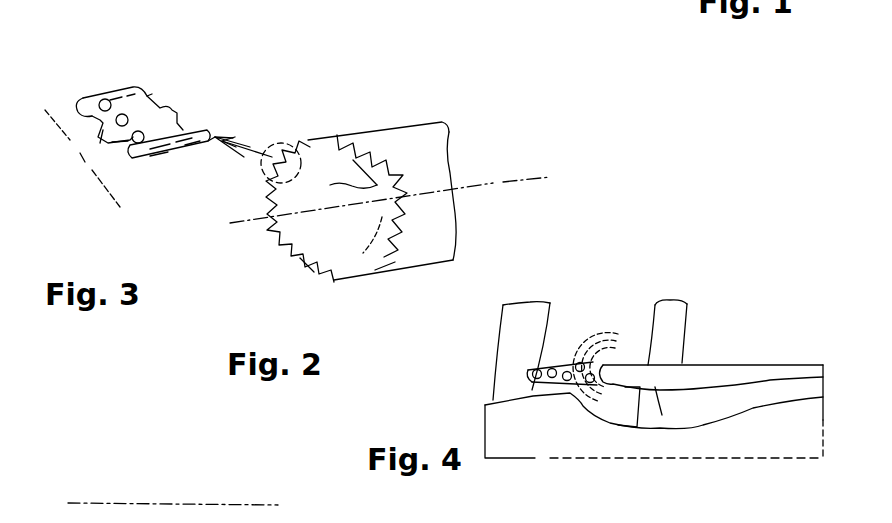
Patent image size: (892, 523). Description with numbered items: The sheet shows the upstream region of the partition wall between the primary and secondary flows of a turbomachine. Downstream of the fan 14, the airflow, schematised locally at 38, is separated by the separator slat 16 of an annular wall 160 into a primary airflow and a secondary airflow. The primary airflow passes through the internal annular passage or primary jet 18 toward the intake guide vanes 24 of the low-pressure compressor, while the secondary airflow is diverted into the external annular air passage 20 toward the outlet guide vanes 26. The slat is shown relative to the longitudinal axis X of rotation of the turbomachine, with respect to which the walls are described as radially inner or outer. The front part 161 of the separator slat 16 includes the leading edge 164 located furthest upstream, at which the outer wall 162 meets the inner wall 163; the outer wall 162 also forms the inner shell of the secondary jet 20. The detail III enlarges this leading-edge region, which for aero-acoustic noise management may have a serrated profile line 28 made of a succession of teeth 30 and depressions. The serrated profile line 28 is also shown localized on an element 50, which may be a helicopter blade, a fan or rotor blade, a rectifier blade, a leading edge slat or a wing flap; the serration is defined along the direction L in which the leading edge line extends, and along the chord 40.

In FIG. 4, the fan 14 is at (500, 333).
In FIG. 3, the separator slat 16 is at (95, 93).
In FIG. 2, the separator slat 16 is at (387, 260).
In FIG. 4, the primary jet 18 is at (654, 411).
In FIG. 4, the external annular air passage 20 is at (713, 351).
In FIG. 4, the intake guide vanes 24 is at (660, 400).
In FIG. 4, the outlet guide vanes 26 is at (668, 323).
In FIG. 3, the serrated profile line 28 is at (100, 143).
In FIG. 2, the serrated profile line 28 is at (263, 227).
In FIG. 3, the teeth 30 is at (87, 100).
In FIG. 4, the airflow 38 is at (568, 363).
In FIG. 3, the chord 40 is at (195, 145).
In FIG. 3, the blade or aerodynamic element 50 is at (160, 110).
In FIG. 2, the annular wall 160 is at (368, 128).
In FIG. 4, the annular wall 160 is at (717, 380).
In FIG. 2, the front part 161 is at (398, 187).
In FIG. 3, the outer wall 162 is at (177, 123).
In FIG. 3, the inner wall 163 is at (163, 153).
In FIG. 3, the leading edge 164 is at (120, 145).
In FIG. 2, the leading edge 164 is at (307, 263).
In FIG. 4, the leading edge 164 is at (612, 367).
In FIG. 2, the direction L is at (100, 500).
In FIG. 2, the longitudinal axis X is at (493, 183).
In FIG. 2, the detail III is at (288, 140).